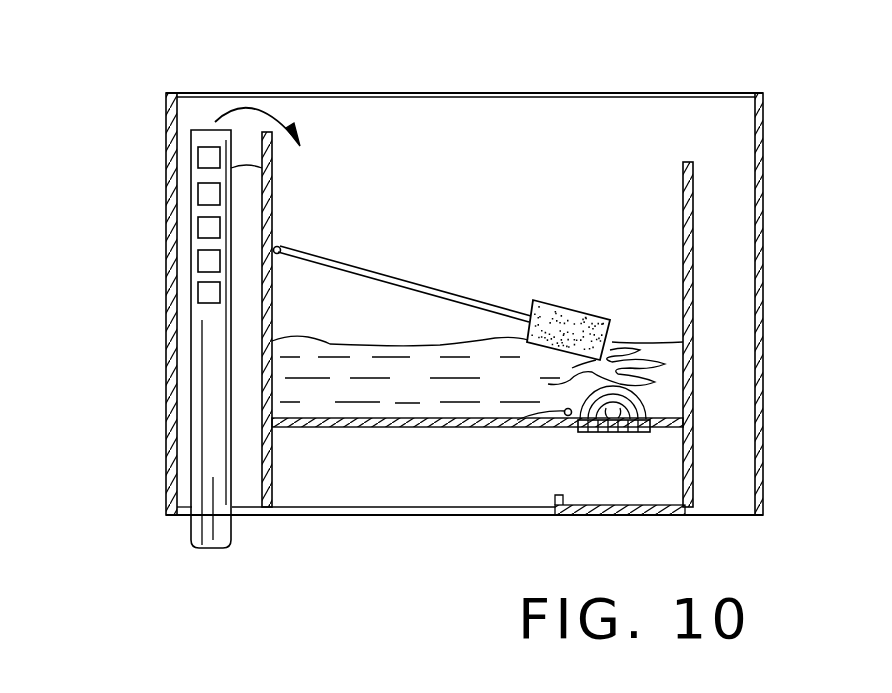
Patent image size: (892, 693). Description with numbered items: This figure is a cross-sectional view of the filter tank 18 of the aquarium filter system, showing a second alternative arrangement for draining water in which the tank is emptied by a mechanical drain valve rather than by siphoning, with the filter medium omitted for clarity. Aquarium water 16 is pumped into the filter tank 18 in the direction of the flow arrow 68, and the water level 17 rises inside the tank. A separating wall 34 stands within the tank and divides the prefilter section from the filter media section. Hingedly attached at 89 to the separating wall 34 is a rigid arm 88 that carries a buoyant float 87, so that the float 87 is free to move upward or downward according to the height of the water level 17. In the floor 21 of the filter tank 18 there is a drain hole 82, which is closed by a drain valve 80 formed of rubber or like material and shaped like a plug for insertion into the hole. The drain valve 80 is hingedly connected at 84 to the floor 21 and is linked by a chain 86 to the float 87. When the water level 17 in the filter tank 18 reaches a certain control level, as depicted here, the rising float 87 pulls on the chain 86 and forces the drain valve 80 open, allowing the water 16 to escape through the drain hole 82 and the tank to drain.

The water 16 is at (420, 381).
The water level 17 is at (320, 338).
The filter tank 18 is at (126, 458).
The floor 21 is at (383, 428).
The separating wall 34 is at (196, 169).
The flow arrow 68 is at (262, 104).
The drain valve 80 is at (663, 408).
The drain hole 82 is at (580, 430).
The hinged connection 84 is at (517, 420).
The chain 86 is at (577, 378).
The buoyant float 87 is at (568, 300).
The rigid arm 88 is at (420, 285).
The hinged attachment 89 is at (282, 244).